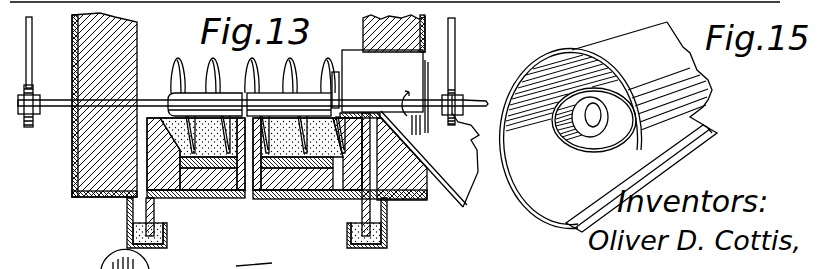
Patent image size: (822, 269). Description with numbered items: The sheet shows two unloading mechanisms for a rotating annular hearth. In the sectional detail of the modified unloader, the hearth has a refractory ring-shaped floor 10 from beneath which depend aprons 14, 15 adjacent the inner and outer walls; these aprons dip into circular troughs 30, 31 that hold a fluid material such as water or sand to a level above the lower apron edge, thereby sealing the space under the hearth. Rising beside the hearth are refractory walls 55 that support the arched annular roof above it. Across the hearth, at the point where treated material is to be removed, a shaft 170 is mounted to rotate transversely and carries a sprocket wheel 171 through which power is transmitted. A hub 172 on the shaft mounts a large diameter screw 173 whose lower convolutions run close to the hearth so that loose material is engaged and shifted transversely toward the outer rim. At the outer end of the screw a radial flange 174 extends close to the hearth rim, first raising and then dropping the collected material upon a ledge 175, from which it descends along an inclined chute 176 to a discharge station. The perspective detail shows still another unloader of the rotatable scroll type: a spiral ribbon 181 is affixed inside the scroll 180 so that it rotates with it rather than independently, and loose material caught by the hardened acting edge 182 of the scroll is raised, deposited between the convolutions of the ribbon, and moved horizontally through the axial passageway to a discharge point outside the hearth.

In FIG. 13, the wall 55 is at (72, 50).
In FIG. 13, the shaft 170 is at (50, 107).
In FIG. 13, the sprocket wheel 171 is at (458, 97).
In FIG. 13, the hub 172 is at (173, 93).
In FIG. 13, the screw 173 is at (288, 68).
In FIG. 13, the radial flange 174 is at (336, 72).
In FIG. 13, the ledge 175 is at (357, 115).
In FIG. 13, the inclined chute 176 is at (432, 160).
In FIG. 13, the ring-shaped floor 10 is at (270, 183).
In FIG. 13, the apron 14 is at (155, 212).
In FIG. 13, the apron 15 is at (362, 210).
In FIG. 13, the circular trough 30 is at (167, 236).
In FIG. 13, the circular trough 31 is at (347, 230).
In FIG. 15, the scroll 180 is at (550, 55).
In FIG. 15, the spiral ribbon 181 is at (590, 145).
In FIG. 15, the hardened acting edge 182 is at (672, 157).